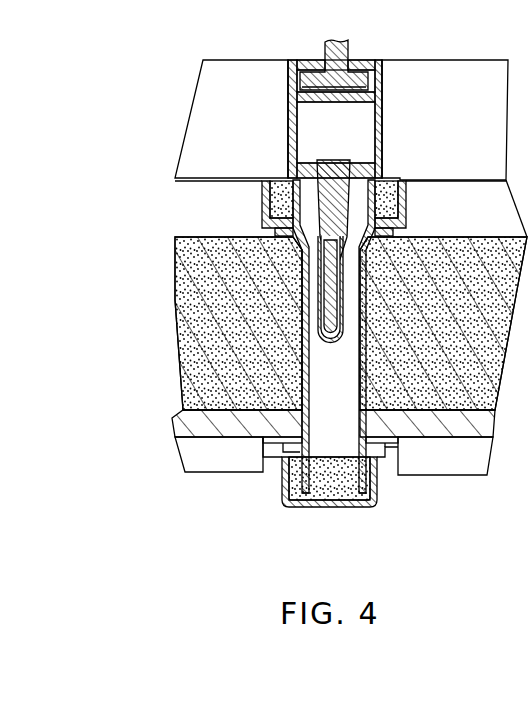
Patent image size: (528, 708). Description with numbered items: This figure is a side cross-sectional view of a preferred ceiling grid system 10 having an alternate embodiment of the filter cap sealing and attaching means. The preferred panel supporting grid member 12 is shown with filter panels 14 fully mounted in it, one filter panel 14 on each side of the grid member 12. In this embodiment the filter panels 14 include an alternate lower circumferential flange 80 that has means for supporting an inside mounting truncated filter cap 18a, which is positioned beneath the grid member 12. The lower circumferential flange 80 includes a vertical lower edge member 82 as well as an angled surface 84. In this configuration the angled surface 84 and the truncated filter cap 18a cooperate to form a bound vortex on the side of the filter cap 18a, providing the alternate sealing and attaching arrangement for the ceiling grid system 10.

The ceiling grid system 10 is at (456, 56).
The panel supporting grid member 12 is at (381, 107).
The filter panel 14 is at (222, 222).
The lower circumferential flange 80 is at (399, 449).
The vertical lower edge member 82 is at (343, 480).
The angled surface 84 is at (386, 459).
The truncated filter cap 18a is at (352, 505).